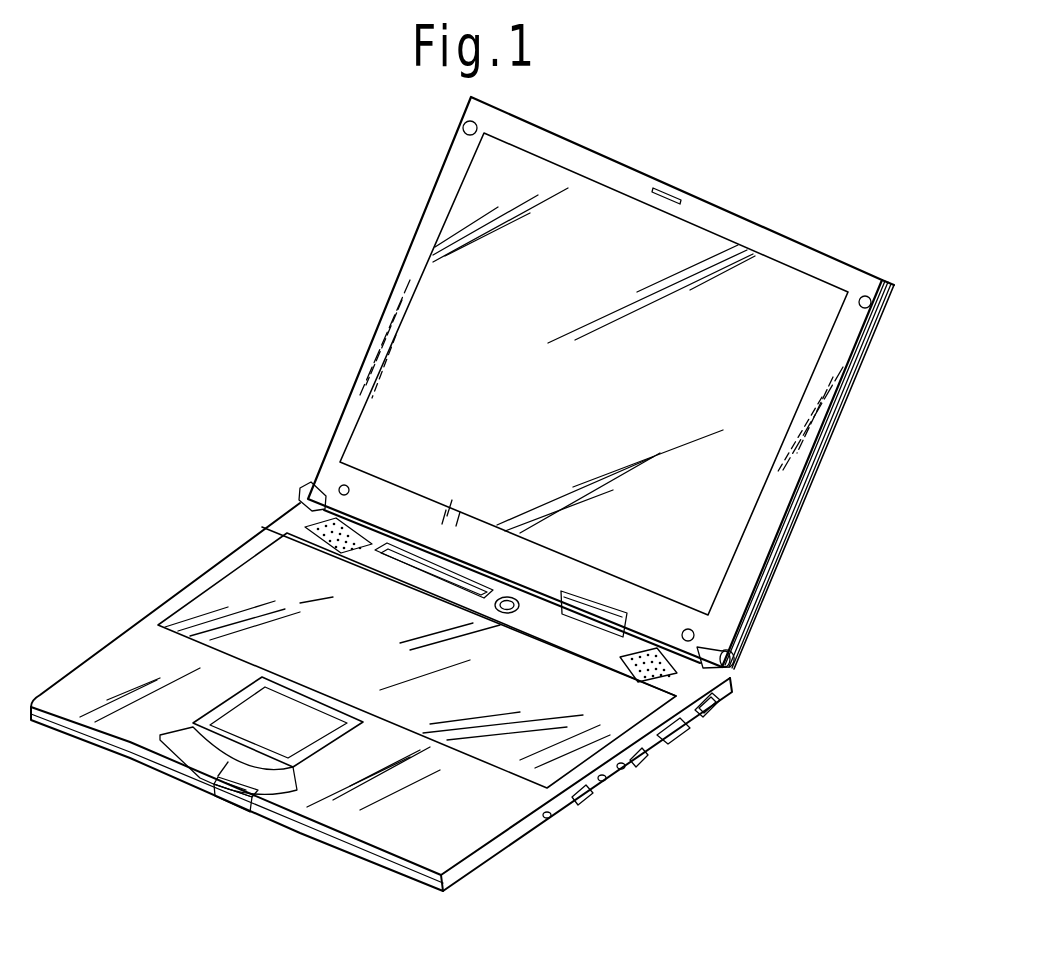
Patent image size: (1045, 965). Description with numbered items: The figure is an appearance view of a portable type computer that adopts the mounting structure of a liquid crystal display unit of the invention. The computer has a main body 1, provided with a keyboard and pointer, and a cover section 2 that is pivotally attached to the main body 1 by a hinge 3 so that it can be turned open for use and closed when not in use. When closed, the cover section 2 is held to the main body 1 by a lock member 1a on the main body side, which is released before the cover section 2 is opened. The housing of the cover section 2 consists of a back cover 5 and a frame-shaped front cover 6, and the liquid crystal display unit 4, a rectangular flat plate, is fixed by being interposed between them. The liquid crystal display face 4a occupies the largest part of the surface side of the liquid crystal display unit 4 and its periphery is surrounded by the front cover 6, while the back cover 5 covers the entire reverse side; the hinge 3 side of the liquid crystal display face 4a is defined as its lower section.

The main body 1 is at (568, 823).
The lock member 1a is at (233, 795).
The cover section 2 is at (833, 477).
The hinge 3 is at (752, 662).
The liquid crystal display unit 4 is at (779, 325).
The liquid crystal display face 4a is at (604, 399).
The back cover 5 is at (847, 409).
The front cover 6 is at (843, 335).